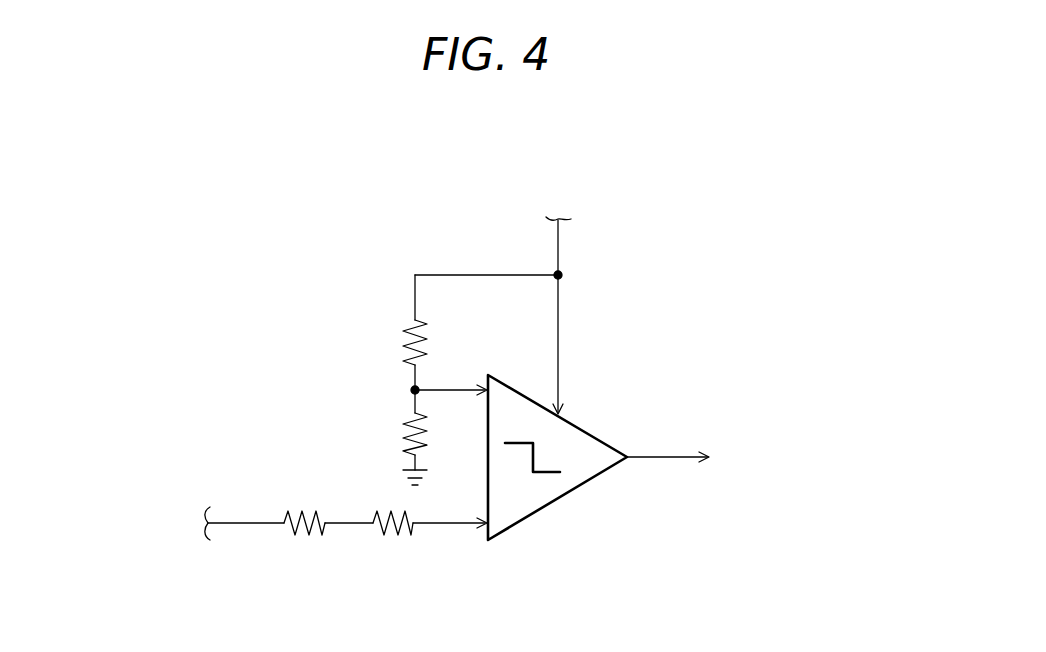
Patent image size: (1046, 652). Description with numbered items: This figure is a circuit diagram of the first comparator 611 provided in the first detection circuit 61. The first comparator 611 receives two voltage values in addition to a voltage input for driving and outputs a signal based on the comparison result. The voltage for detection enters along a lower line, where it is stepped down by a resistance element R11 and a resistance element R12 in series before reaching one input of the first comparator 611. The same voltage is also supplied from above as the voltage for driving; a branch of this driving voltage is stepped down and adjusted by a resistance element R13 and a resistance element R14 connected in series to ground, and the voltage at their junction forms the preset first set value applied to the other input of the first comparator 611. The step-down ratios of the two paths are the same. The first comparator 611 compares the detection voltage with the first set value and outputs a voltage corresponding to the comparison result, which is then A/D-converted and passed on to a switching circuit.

The first detection circuit 61 is at (459, 359).
The first comparator 611 is at (562, 498).
The resistance element R11 is at (297, 540).
The resistance element R12 is at (397, 540).
The resistance element R13 is at (403, 346).
The resistance element R14 is at (403, 432).